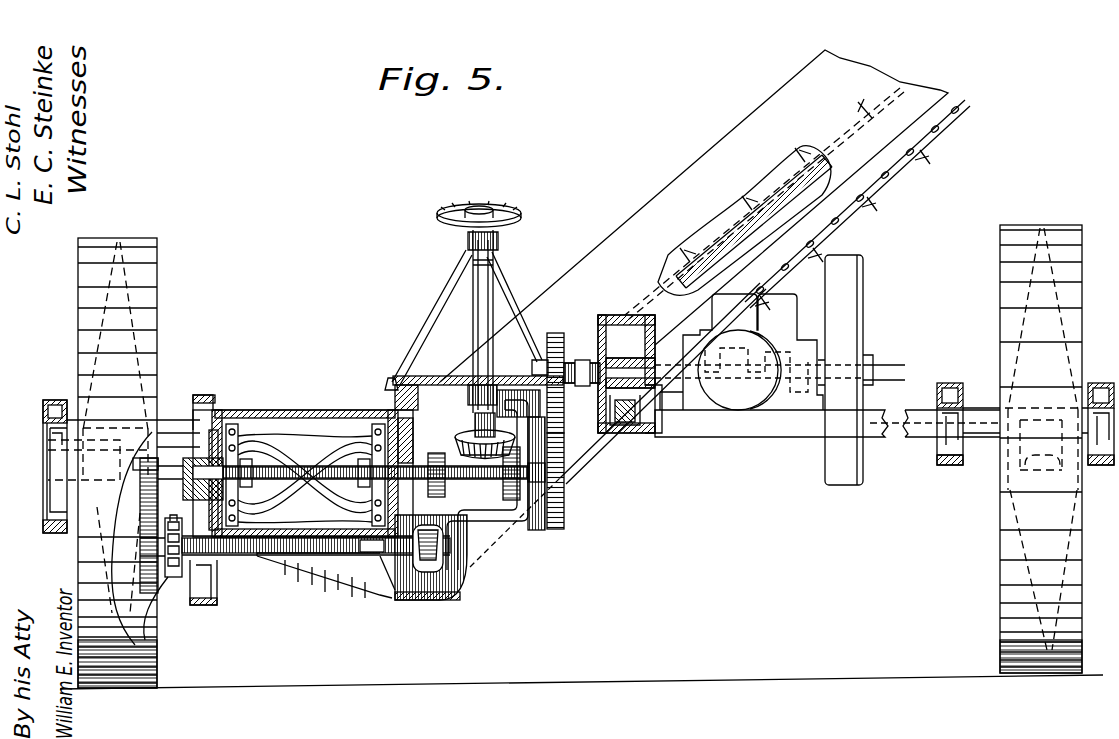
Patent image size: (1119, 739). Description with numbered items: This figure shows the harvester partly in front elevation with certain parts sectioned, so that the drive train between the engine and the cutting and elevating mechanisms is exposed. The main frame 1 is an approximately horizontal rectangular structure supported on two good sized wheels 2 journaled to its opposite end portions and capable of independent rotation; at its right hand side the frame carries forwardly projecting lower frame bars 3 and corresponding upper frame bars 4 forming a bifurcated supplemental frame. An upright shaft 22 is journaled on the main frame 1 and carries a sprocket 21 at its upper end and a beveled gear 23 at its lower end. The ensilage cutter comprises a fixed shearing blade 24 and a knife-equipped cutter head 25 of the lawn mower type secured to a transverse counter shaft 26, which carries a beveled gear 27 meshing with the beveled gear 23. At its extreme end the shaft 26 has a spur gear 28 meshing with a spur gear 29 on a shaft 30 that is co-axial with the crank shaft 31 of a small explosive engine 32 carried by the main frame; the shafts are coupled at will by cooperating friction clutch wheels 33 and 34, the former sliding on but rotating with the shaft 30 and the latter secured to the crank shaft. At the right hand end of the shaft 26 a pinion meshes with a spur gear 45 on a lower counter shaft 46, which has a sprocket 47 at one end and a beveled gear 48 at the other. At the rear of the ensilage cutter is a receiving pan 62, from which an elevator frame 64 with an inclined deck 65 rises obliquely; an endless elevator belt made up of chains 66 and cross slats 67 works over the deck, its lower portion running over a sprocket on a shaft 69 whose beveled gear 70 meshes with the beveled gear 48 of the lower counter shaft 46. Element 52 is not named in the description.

The main frame 1 is at (15, 338).
The wheels 2 is at (100, 545).
The lower frame bars 3 is at (233, 570).
The upper frame bars 4 is at (204, 395).
The sprocket 21 is at (515, 212).
The upright shaft 22 is at (488, 302).
The beveled gear 23 is at (458, 392).
The fixed shearing blade 24 is at (145, 483).
The cutter head 25 is at (277, 436).
The transverse counter shaft 26 is at (330, 462).
The beveled gear 27 is at (508, 505).
The spur gear 28 is at (565, 512).
The spur gear 29 is at (556, 334).
The shaft 30 is at (632, 318).
The crank shaft 31 is at (628, 425).
The explosive engine 32 is at (738, 355).
The friction clutch wheel 33 is at (612, 425).
The friction clutch wheel 34 is at (655, 420).
The spur gear 45 is at (168, 590).
The lower counter shaft 46 is at (275, 560).
The sprocket 47 is at (178, 577).
The beveled gear 48 is at (437, 570).
The housing 52 is at (412, 428).
The receiving pan 62 is at (362, 560).
The elevator frame 64 is at (748, 135).
The inclined deck 65 is at (777, 195).
The chains 66 is at (868, 200).
The cross slats 67 is at (935, 138).
The shaft 69 is at (380, 600).
The beveled gear 70 is at (418, 518).